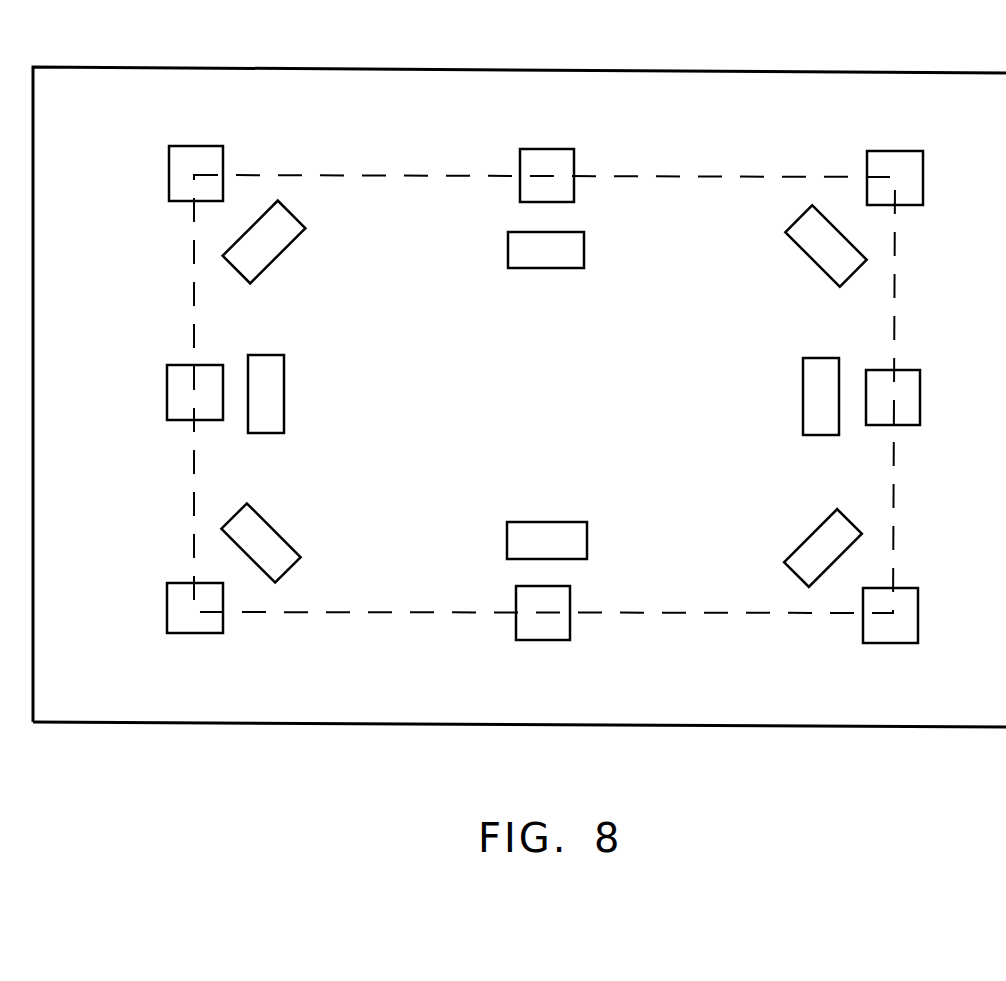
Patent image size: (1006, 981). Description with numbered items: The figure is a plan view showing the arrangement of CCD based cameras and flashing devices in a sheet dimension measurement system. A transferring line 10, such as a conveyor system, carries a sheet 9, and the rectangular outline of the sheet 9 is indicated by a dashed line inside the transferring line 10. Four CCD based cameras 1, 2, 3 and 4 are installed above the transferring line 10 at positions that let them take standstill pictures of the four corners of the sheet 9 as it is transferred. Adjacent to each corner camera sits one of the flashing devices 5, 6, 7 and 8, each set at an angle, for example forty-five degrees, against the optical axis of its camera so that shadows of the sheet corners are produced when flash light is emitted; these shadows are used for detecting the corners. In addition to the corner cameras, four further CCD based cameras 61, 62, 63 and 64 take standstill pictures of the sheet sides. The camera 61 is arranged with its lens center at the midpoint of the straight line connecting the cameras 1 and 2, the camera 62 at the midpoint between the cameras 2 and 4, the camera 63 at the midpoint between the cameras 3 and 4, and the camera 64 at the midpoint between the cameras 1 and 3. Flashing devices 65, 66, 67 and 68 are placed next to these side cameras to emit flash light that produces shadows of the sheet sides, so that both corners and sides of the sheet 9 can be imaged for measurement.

The transferring line 10 is at (130, 67).
The sheet 9 is at (395, 613).
The CCD based camera 1 is at (202, 146).
The CCD based camera 2 is at (903, 151).
The CCD based camera 3 is at (195, 633).
The CCD based camera 4 is at (890, 643).
The flashing device 5 is at (287, 248).
The flashing device 6 is at (287, 540).
The flashing device 7 is at (802, 253).
The flashing device 8 is at (805, 540).
The CCD based camera 61 is at (552, 149).
The CCD based camera 62 is at (920, 394).
The CCD based camera 63 is at (542, 640).
The CCD based camera 64 is at (167, 392).
The flashing device 65 is at (548, 268).
The flashing device 66 is at (803, 393).
The flashing device 67 is at (550, 522).
The flashing device 68 is at (284, 392).